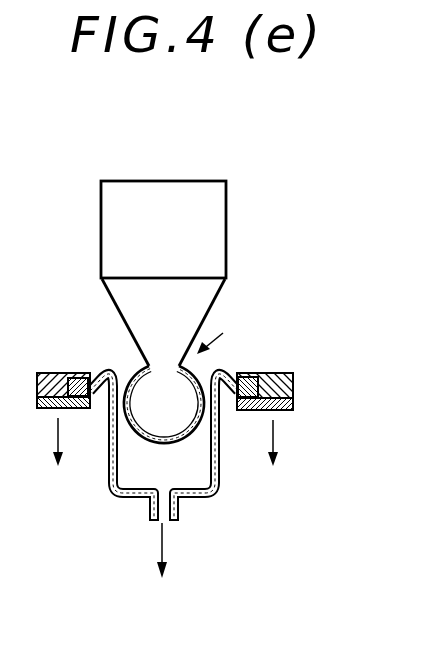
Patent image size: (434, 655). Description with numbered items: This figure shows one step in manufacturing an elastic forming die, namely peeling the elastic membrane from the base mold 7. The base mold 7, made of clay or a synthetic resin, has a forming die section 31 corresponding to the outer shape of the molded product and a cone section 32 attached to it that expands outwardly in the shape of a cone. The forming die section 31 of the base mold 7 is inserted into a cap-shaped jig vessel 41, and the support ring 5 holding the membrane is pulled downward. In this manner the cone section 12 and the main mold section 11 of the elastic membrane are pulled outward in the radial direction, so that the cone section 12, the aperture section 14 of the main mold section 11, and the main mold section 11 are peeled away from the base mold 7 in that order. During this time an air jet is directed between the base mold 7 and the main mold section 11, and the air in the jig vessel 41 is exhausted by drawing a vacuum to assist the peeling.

The base mold 7 is at (232, 191).
The cone section 32 is at (214, 300).
The forming die section 31 is at (148, 412).
The main mold section 11 is at (142, 425).
The jig vessel 41 is at (221, 485).
The support ring 5 is at (45, 368).
The cone section 12 is at (120, 364).
The aperture section 14 is at (131, 362).